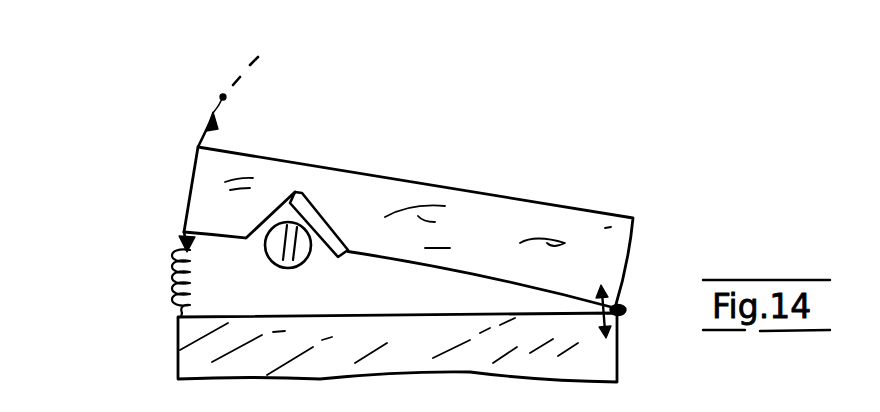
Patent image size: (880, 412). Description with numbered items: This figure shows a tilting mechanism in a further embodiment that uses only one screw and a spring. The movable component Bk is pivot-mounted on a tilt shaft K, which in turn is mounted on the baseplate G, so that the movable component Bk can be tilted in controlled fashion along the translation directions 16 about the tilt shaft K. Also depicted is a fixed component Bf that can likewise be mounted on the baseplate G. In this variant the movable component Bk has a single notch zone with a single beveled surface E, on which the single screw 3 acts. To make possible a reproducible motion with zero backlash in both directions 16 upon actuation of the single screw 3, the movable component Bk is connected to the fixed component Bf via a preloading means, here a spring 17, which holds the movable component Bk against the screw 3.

The translation directions 16 is at (223, 97).
The spring 17 is at (172, 270).
The screw 3 is at (298, 248).
The beveled surface E is at (318, 230).
The tilt shaft K is at (627, 307).
The baseplate G is at (487, 178).
The movable component Bk is at (510, 257).
The fixed component Bf is at (410, 360).